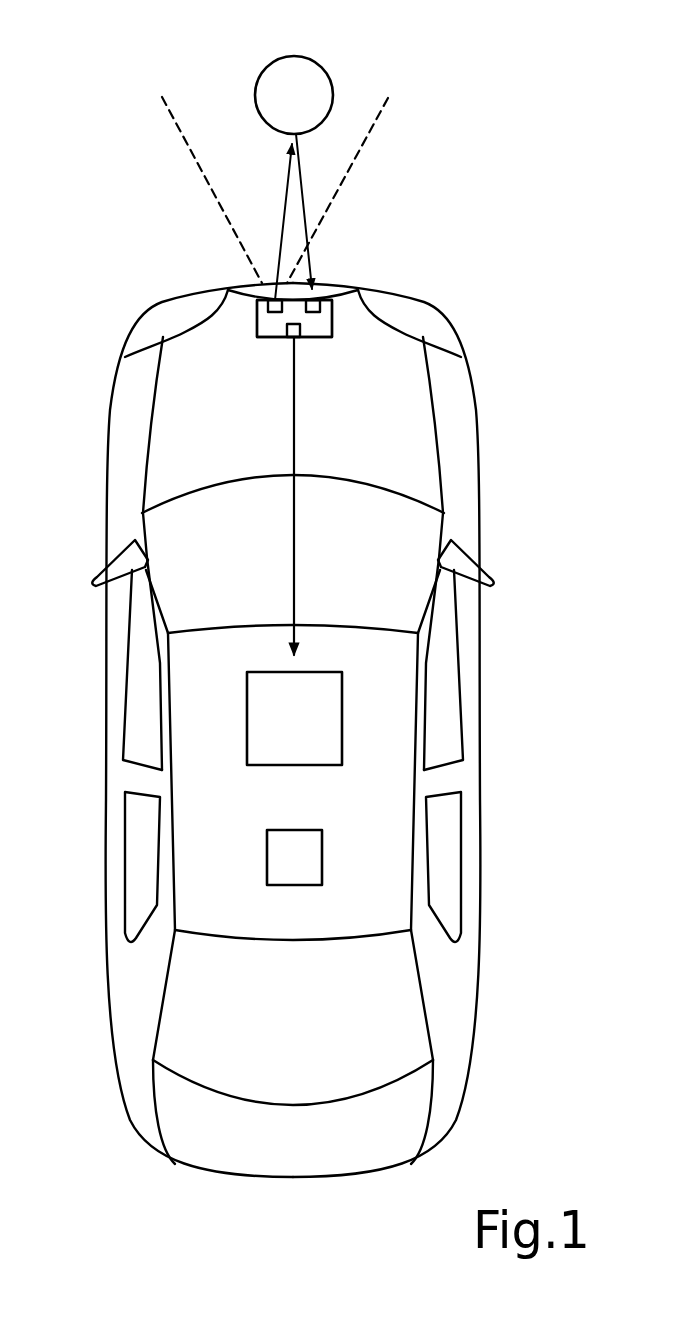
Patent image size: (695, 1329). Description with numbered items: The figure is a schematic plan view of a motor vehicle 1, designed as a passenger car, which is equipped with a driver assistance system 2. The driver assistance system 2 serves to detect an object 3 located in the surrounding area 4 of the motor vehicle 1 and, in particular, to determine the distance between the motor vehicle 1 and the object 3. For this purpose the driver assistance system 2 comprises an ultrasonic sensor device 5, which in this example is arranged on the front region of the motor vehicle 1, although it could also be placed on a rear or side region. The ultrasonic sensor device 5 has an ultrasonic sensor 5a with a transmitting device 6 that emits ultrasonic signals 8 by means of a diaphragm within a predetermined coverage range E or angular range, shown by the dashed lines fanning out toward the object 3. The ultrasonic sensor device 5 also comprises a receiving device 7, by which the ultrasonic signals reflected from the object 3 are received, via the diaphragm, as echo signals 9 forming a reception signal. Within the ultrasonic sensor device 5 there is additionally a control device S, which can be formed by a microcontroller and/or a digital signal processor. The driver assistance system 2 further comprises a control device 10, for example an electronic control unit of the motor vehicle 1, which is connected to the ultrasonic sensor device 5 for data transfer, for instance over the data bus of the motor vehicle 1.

The motor vehicle 1 is at (153, 266).
The driver assistance system 2 is at (313, 855).
The object 3 is at (330, 72).
The surrounding area 4 is at (60, 660).
The ultrasonic sensor device 5 is at (335, 317).
The ultrasonic sensor 5a is at (312, 327).
The transmitting device 6 is at (277, 311).
The receiving device 7 is at (322, 298).
The ultrasonic signal 8 is at (280, 216).
The echo signal 9 is at (304, 215).
The control device 10 is at (313, 733).
The coverage range E is at (185, 142).
The control device S is at (297, 338).